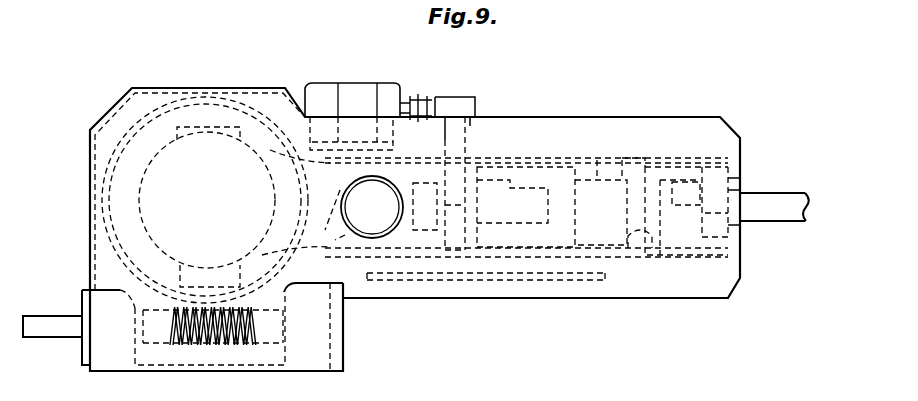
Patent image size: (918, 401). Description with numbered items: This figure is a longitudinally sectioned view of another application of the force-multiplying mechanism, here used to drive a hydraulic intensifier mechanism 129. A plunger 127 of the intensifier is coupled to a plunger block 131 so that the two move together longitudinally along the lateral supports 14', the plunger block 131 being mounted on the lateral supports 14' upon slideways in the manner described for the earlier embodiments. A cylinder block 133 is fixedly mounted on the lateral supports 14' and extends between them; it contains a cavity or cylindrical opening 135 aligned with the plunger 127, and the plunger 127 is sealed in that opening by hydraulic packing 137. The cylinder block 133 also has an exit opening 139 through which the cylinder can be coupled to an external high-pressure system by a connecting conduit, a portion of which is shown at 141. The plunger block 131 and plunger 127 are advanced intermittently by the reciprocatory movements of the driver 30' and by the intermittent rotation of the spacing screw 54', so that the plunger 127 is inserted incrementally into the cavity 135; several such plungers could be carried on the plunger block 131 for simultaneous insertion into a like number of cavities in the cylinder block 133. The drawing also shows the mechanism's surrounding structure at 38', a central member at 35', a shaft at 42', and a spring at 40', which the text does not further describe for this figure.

The lateral supports 14' is at (415, 218).
The casing 38' is at (179, 198).
The hub 35' is at (234, 207).
The shaft 42' is at (54, 322).
The spring 40' is at (232, 342).
The driver 30' is at (526, 293).
The spacing screw 54' is at (486, 289).
The hydraulic intensifier mechanism 129 is at (482, 99).
The plunger block 131 is at (510, 180).
The plunger 127 is at (598, 160).
The cylinder block 133 is at (668, 167).
The cylindrical opening 135 is at (722, 165).
The exit opening 139 is at (742, 172).
The connecting conduit 141 is at (770, 222).
The hydraulic packing 137 is at (648, 258).